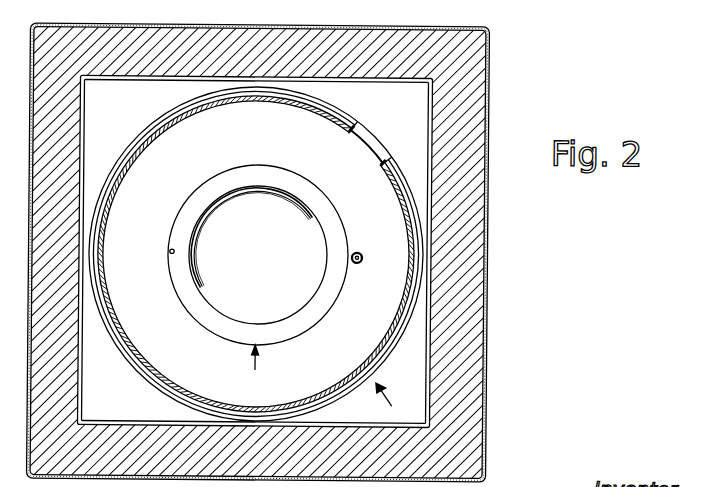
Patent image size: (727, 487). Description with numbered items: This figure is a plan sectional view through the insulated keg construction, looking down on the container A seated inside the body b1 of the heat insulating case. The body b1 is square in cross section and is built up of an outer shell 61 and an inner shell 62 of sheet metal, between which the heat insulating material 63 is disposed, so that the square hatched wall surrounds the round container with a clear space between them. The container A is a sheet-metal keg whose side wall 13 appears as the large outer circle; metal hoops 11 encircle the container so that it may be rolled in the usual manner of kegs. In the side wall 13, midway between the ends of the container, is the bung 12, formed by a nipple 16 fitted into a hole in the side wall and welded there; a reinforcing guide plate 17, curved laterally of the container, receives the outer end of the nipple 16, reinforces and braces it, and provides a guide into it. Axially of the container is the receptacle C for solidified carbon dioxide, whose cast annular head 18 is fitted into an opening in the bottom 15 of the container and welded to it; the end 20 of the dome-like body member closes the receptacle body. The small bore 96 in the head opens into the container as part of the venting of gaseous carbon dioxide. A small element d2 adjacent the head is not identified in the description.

The metal hoops 11 is at (163, 118).
The bung 12 is at (381, 147).
The side wall 13 is at (315, 112).
The bottom 15 is at (163, 352).
The nipple 16 is at (362, 124).
The reinforcing guide plate 17 is at (343, 110).
The cast annular head 18 is at (318, 307).
The end 20 is at (230, 225).
The outer shell 61 is at (488, 287).
The inner shell 62 is at (430, 107).
The heat insulating material 63 is at (487, 199).
The bore 96 is at (170, 254).
The body b1 is at (492, 83).
The stop pin d2 is at (375, 245).
The container A is at (394, 403).
The receptacle C is at (254, 373).